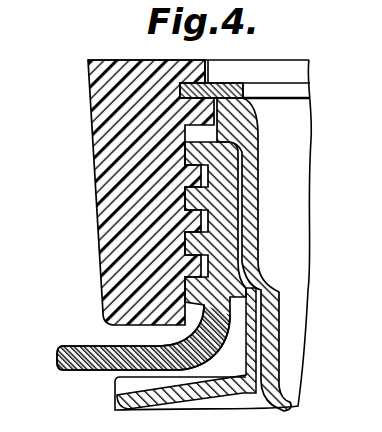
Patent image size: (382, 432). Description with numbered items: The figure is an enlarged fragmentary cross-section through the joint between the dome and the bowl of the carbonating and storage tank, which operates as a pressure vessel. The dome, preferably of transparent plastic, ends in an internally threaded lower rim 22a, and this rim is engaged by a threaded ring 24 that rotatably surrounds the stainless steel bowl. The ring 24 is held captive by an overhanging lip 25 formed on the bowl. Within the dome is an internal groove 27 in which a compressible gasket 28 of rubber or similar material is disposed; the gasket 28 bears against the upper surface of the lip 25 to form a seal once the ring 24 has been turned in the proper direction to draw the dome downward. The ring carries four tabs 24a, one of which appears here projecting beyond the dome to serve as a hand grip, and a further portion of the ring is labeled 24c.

The internally threaded lower rim 22a is at (123, 146).
The threaded ring 24 is at (217, 220).
The tabs 24a is at (76, 352).
The portion of sealing ring 24c is at (298, 1).
The overhanging lip 25 is at (238, 104).
The internal groove 27 is at (182, 91).
The compressible gasket 28 is at (217, 82).